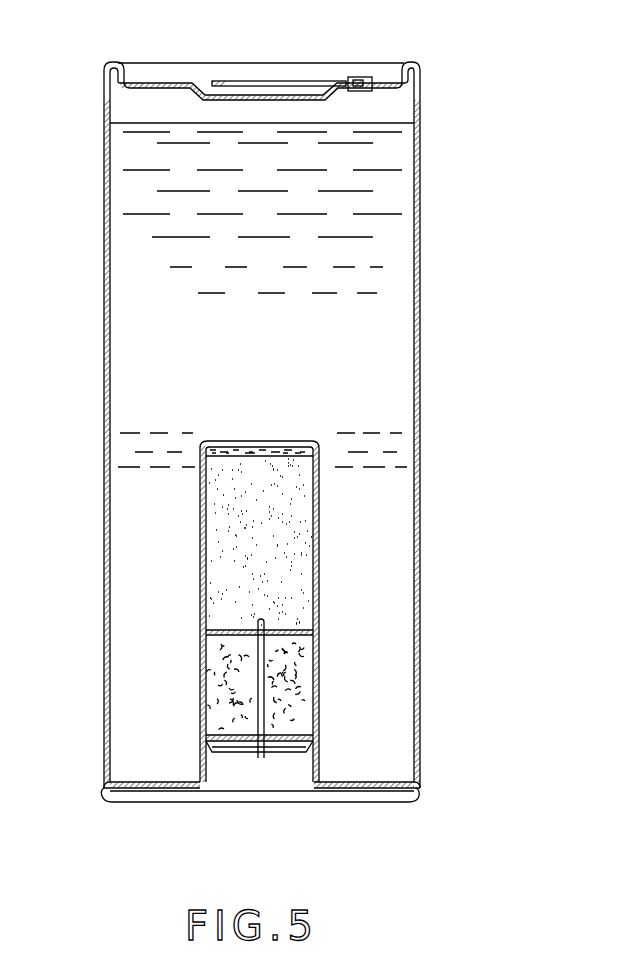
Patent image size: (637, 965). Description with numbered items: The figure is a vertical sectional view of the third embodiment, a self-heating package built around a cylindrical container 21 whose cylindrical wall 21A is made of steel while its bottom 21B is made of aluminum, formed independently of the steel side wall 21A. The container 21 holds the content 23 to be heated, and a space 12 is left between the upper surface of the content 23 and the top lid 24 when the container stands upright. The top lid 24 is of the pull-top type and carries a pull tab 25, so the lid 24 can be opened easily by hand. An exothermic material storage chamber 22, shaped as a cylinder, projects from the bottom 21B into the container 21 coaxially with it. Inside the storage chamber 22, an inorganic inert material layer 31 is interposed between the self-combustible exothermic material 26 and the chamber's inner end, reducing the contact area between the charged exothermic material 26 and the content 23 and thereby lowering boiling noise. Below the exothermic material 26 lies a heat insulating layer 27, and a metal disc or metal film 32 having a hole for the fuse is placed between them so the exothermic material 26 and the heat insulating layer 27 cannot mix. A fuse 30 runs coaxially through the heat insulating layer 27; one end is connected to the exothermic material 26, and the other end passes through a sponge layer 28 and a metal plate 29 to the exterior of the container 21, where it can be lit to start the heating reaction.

The space 12 is at (400, 118).
The cylindrical container 21 is at (428, 382).
The cylindrical wall 21A is at (104, 453).
The bottom 21B is at (380, 803).
The exothermic material storage chamber 22 is at (324, 598).
The content to be heated 23 is at (384, 282).
The top lid 24 is at (156, 82).
The pull tab 25 is at (284, 82).
The self-combustible exothermic material 26 is at (224, 578).
The heat insulating layer 27 is at (212, 684).
The sponge layer 28 is at (236, 743).
The metal plate 29 is at (292, 747).
The fuse 30 is at (259, 760).
The inorganic inert material layer 31 is at (258, 443).
The metal disc or metal film 32 is at (312, 638).